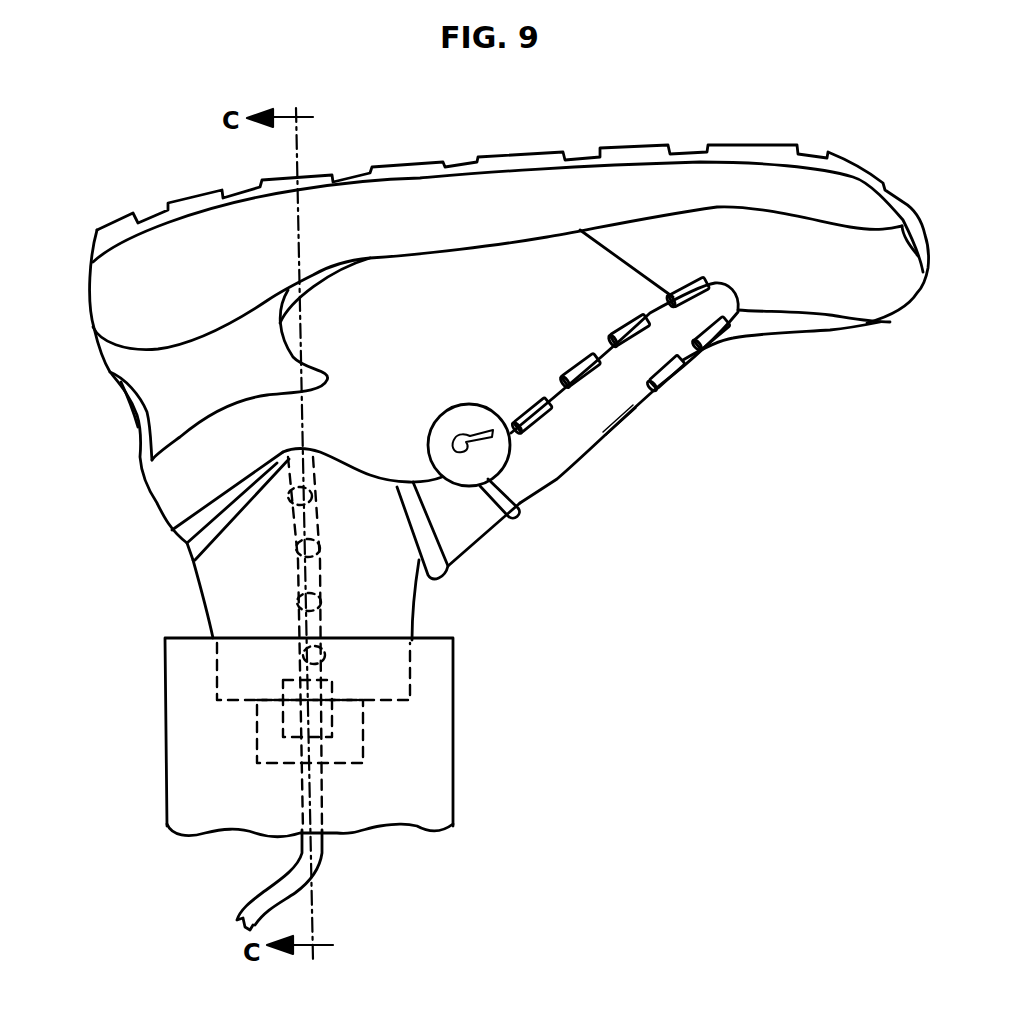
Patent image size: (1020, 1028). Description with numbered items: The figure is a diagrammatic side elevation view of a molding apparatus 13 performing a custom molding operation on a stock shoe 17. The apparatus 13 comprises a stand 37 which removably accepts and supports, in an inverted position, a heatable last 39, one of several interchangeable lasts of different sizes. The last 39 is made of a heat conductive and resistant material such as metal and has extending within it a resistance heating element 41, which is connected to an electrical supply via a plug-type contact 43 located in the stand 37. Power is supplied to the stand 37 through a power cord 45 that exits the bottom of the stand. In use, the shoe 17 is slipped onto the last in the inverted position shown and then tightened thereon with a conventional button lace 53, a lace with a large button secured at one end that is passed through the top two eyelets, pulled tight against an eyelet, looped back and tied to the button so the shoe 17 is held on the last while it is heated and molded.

The shoe 17 is at (86, 371).
The button lace 53 is at (508, 458).
The heatable last 39 is at (413, 617).
The resistance heating element 41 is at (297, 570).
The stand 37 is at (457, 774).
The molding apparatus 13 is at (503, 672).
The plug-type contact 43 is at (290, 683).
The power cord 45 is at (253, 892).